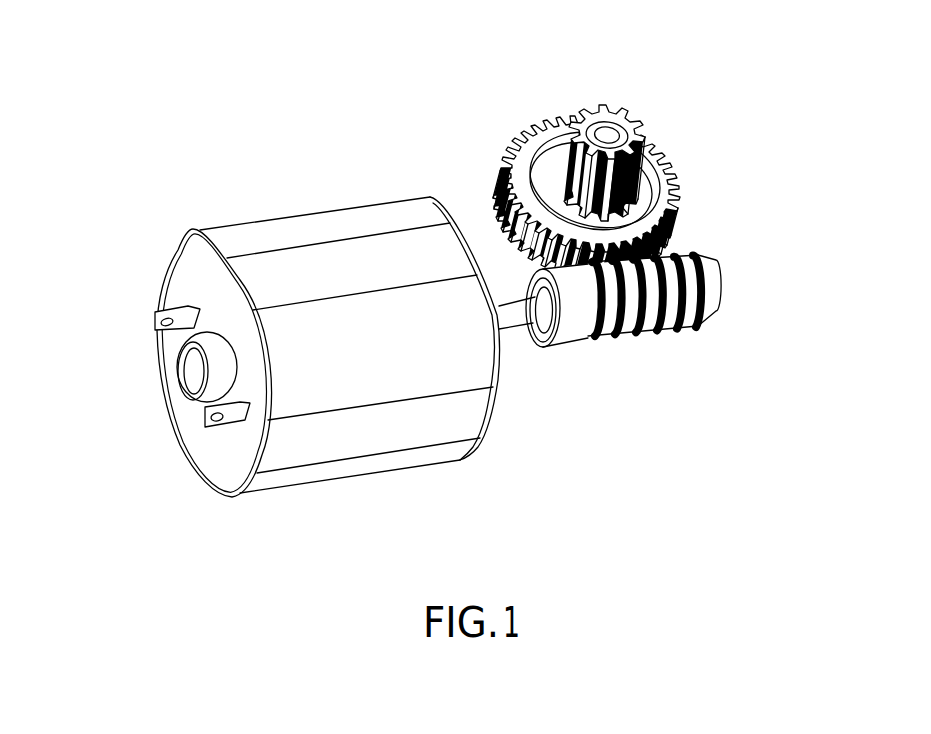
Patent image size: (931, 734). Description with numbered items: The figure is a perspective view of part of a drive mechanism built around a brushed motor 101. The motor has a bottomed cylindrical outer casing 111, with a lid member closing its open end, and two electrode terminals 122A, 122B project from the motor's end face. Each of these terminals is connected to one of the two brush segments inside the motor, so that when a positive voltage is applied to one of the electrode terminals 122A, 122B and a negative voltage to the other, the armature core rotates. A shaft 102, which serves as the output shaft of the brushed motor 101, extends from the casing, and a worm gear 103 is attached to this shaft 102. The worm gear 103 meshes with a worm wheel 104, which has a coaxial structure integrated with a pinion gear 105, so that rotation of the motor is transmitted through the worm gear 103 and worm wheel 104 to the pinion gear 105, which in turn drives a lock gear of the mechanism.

The brushed motor 101 is at (372, 185).
The shaft 102 is at (522, 320).
The worm gear 103 is at (650, 327).
The worm wheel 104 is at (520, 140).
The pinion gear 105 is at (645, 127).
The outer casing 111 is at (285, 228).
The electrode terminal 122A is at (177, 310).
The electrode terminal 122B is at (230, 422).